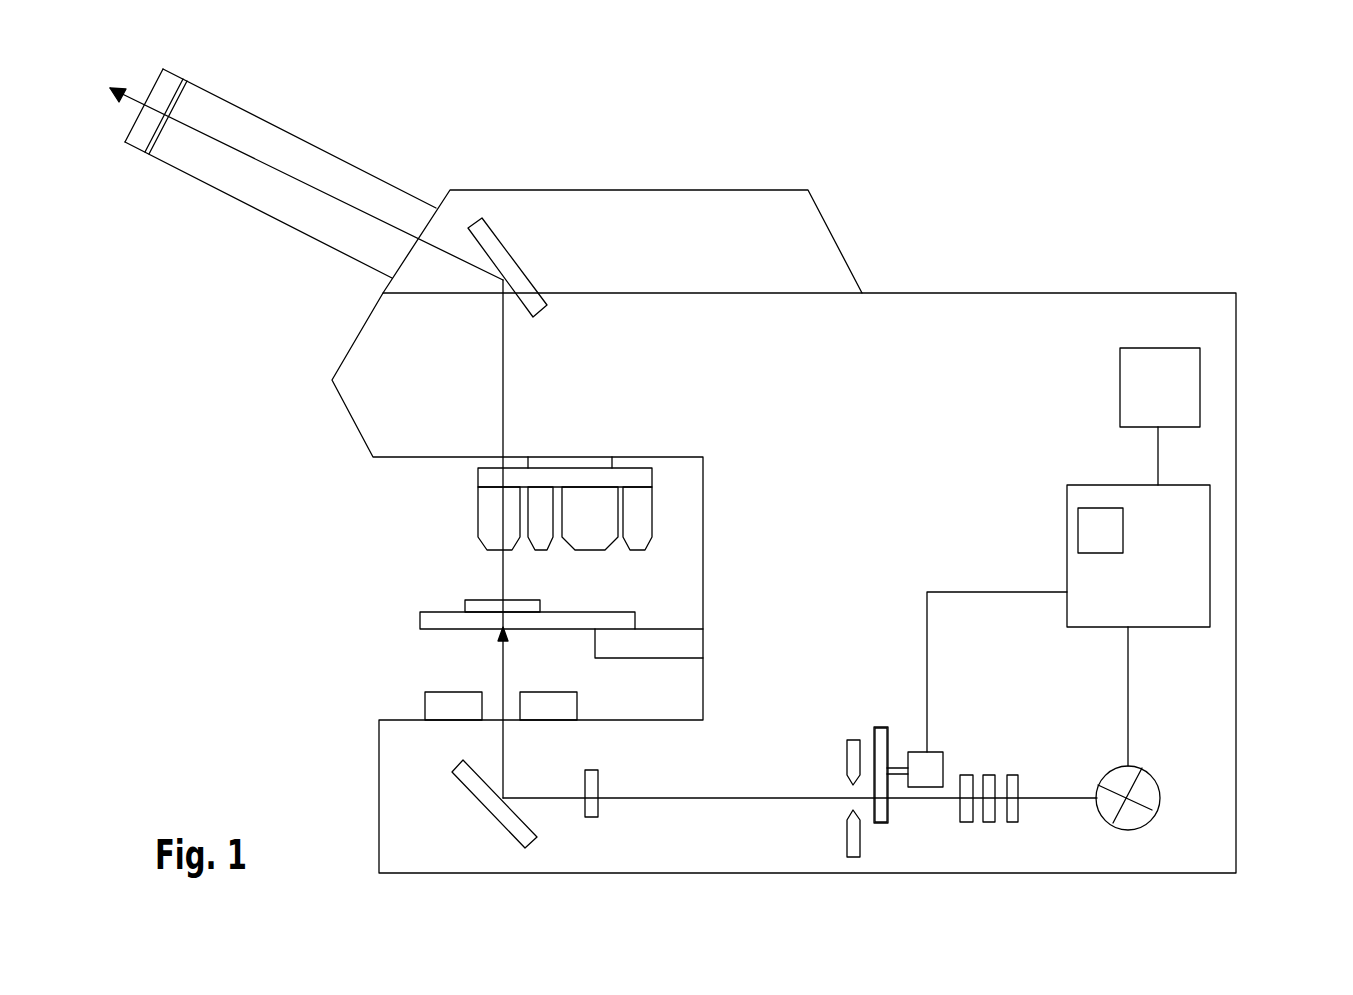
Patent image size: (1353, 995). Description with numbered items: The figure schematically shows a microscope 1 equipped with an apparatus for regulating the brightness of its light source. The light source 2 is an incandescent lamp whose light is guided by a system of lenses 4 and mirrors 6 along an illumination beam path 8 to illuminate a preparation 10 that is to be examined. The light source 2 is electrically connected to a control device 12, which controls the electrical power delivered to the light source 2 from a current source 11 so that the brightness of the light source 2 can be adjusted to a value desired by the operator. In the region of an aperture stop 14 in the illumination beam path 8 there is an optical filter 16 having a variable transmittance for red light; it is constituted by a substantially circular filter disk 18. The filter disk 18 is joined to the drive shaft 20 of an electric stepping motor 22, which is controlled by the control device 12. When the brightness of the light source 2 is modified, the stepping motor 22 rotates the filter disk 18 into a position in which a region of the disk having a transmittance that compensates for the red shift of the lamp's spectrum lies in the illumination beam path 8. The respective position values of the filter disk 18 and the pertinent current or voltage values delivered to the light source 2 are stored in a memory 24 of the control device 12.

The microscope 1 is at (999, 240).
The light source 2 is at (1145, 798).
The lenses 4 is at (612, 772).
The mirrors 6 is at (500, 267).
The illumination beam path 8 is at (722, 800).
The preparation 10 is at (442, 580).
The current source 11 is at (1162, 390).
The control device 12 is at (1200, 577).
The aperture stop 14 is at (853, 837).
The optical filter 16 is at (862, 697).
The filter disk 18 is at (880, 807).
The drive shaft 20 is at (892, 777).
The electric stepping motor 22 is at (925, 765).
The memory 24 is at (1103, 535).